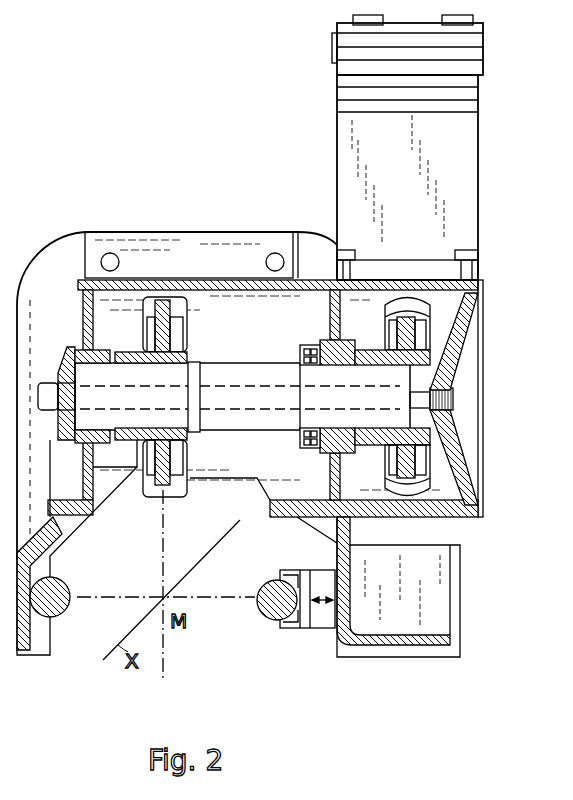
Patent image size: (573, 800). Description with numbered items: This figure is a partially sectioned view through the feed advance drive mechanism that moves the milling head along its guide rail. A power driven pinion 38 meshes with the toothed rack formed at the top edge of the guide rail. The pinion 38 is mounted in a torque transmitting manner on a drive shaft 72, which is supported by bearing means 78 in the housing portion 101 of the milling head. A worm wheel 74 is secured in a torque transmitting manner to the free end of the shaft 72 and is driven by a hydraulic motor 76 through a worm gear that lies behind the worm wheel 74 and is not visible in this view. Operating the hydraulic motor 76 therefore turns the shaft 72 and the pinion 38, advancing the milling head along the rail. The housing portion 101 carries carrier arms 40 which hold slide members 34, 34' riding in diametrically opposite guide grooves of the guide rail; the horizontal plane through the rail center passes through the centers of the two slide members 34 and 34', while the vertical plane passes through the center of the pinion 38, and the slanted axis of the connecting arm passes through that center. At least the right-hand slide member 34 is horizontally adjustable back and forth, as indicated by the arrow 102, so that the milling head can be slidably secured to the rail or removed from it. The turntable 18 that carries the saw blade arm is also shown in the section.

The housing portion 101 is at (203, 287).
The hydraulic motor 76 is at (345, 180).
The drive shaft 72 is at (228, 370).
The turntable 18 is at (103, 363).
The pinion 38 is at (183, 483).
The bearing means 78 is at (315, 345).
The worm wheel 74 is at (465, 312).
The carrier arm 40 is at (38, 640).
The slide member 34 is at (280, 598).
The slide member 34' is at (71, 591).
The arrow 102 is at (320, 628).